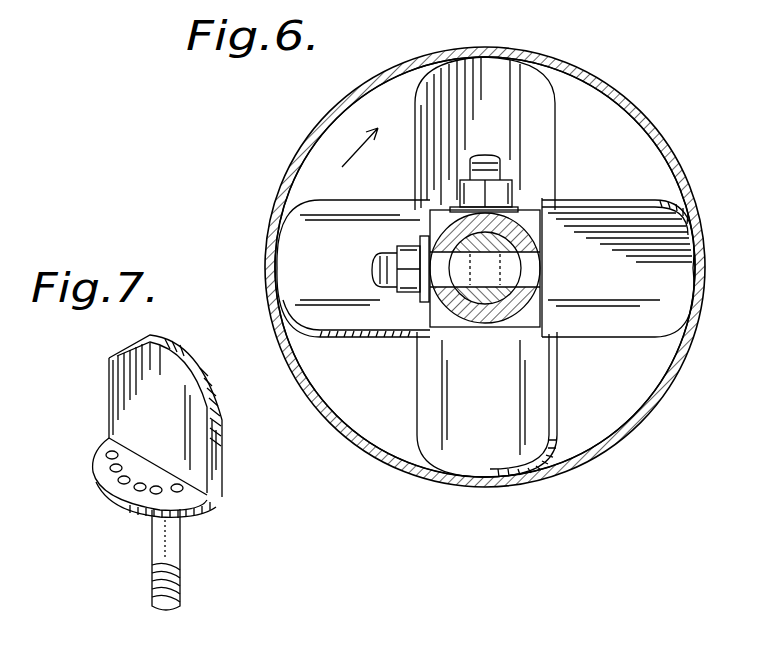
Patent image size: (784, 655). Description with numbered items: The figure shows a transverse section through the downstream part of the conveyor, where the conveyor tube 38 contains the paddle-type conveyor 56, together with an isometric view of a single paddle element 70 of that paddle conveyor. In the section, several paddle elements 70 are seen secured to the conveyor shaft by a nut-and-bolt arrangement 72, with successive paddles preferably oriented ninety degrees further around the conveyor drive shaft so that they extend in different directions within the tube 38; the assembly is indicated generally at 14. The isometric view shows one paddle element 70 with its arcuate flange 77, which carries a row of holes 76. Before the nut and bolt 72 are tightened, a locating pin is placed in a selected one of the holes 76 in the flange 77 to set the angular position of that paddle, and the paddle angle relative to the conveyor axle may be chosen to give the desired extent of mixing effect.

In FIG. 6, the rotor assembly 14 is at (312, 128).
In FIG. 6, the conveyor tube 38 is at (676, 392).
In FIG. 6, the paddle-type conveyor 56 is at (628, 130).
In FIG. 6, the paddle element 70 is at (391, 184).
In FIG. 7, the paddle element 70 is at (228, 343).
In FIG. 6, the nut-and-bolt arrangement 72 is at (552, 173).
In FIG. 7, the holes 76 is at (113, 469).
In FIG. 7, the arcuate flange 77 is at (198, 507).